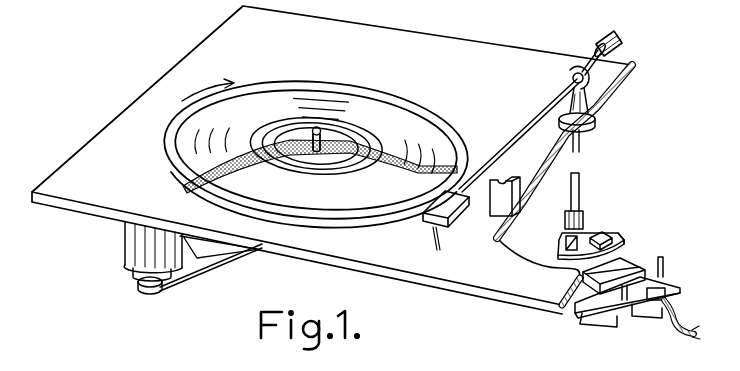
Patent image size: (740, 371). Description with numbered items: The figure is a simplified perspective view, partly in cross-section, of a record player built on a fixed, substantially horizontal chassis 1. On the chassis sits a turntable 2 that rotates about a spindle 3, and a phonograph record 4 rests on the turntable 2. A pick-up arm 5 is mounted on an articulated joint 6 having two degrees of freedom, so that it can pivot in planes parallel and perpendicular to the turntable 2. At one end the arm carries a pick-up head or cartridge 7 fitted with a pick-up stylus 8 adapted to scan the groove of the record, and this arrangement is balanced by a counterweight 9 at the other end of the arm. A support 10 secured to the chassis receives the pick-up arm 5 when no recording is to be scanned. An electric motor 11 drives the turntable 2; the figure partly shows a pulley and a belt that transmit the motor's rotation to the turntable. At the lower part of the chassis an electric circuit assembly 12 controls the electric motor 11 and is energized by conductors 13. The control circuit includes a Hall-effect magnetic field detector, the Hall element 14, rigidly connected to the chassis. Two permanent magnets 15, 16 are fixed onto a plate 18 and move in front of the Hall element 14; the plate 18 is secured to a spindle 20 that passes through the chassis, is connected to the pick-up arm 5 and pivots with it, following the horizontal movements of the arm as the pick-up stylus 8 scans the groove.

The base plate 1 is at (83, 189).
The turntable 2 is at (347, 190).
The spindle 3 is at (320, 133).
The phonograph record 4 is at (225, 112).
The pick-up arm 5 is at (532, 119).
The articulated joint 6 is at (575, 68).
The pick-up head or cartridge 7 is at (458, 214).
The pick-up stylus 8 is at (439, 250).
The counterweight 9 is at (624, 47).
The support 10 is at (498, 197).
The electric motor 11 is at (152, 240).
The electric circuit assembly 12 is at (589, 304).
The conductors 13 is at (671, 322).
The Hall-effect magnetic field detector element 14 is at (630, 270).
The permanent magnet 15 is at (559, 238).
The permanent magnet 16 is at (596, 233).
The plate 18 is at (616, 240).
The spindle 20 is at (579, 184).